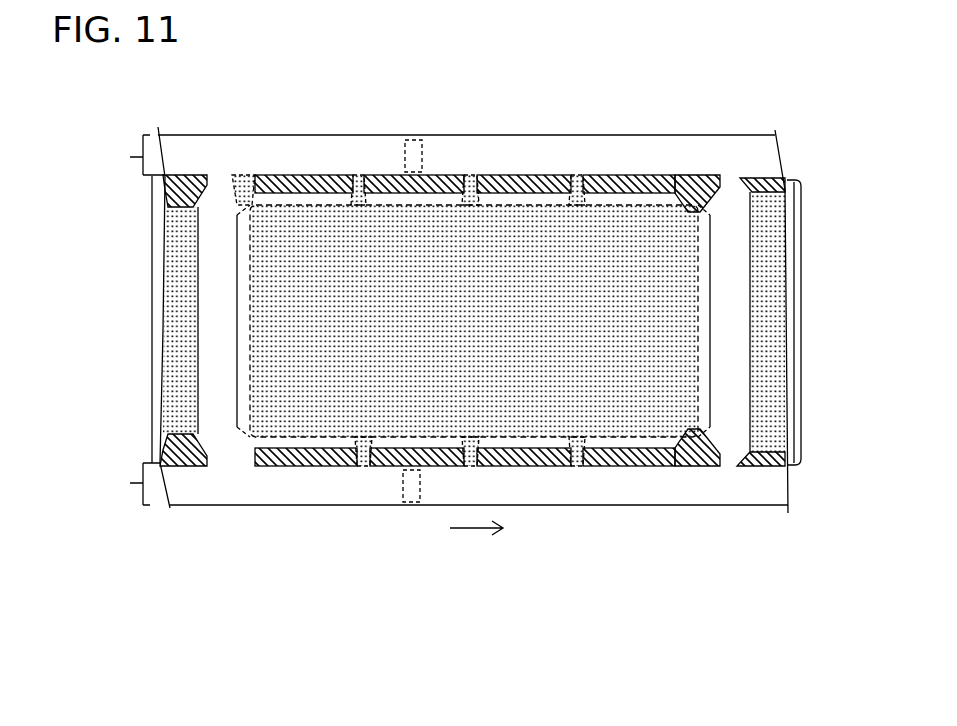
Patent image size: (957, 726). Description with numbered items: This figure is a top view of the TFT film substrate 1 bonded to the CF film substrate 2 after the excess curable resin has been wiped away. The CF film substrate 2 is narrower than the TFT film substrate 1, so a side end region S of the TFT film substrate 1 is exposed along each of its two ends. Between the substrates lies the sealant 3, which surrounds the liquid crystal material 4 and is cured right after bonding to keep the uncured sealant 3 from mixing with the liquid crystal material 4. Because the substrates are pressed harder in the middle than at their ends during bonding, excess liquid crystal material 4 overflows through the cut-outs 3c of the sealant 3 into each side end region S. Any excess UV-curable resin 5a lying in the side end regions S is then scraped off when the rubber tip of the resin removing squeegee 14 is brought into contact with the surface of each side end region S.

The TFT film substrate 1 is at (716, 152).
The CF film substrate 2 is at (803, 465).
The sealant 3 is at (638, 197).
The cut-outs 3c is at (352, 175).
The liquid crystal material 4 is at (462, 333).
The UV-curable resin 5a is at (583, 175).
The resin removing squeegee 14 is at (410, 140).
The side end region S is at (138, 320).